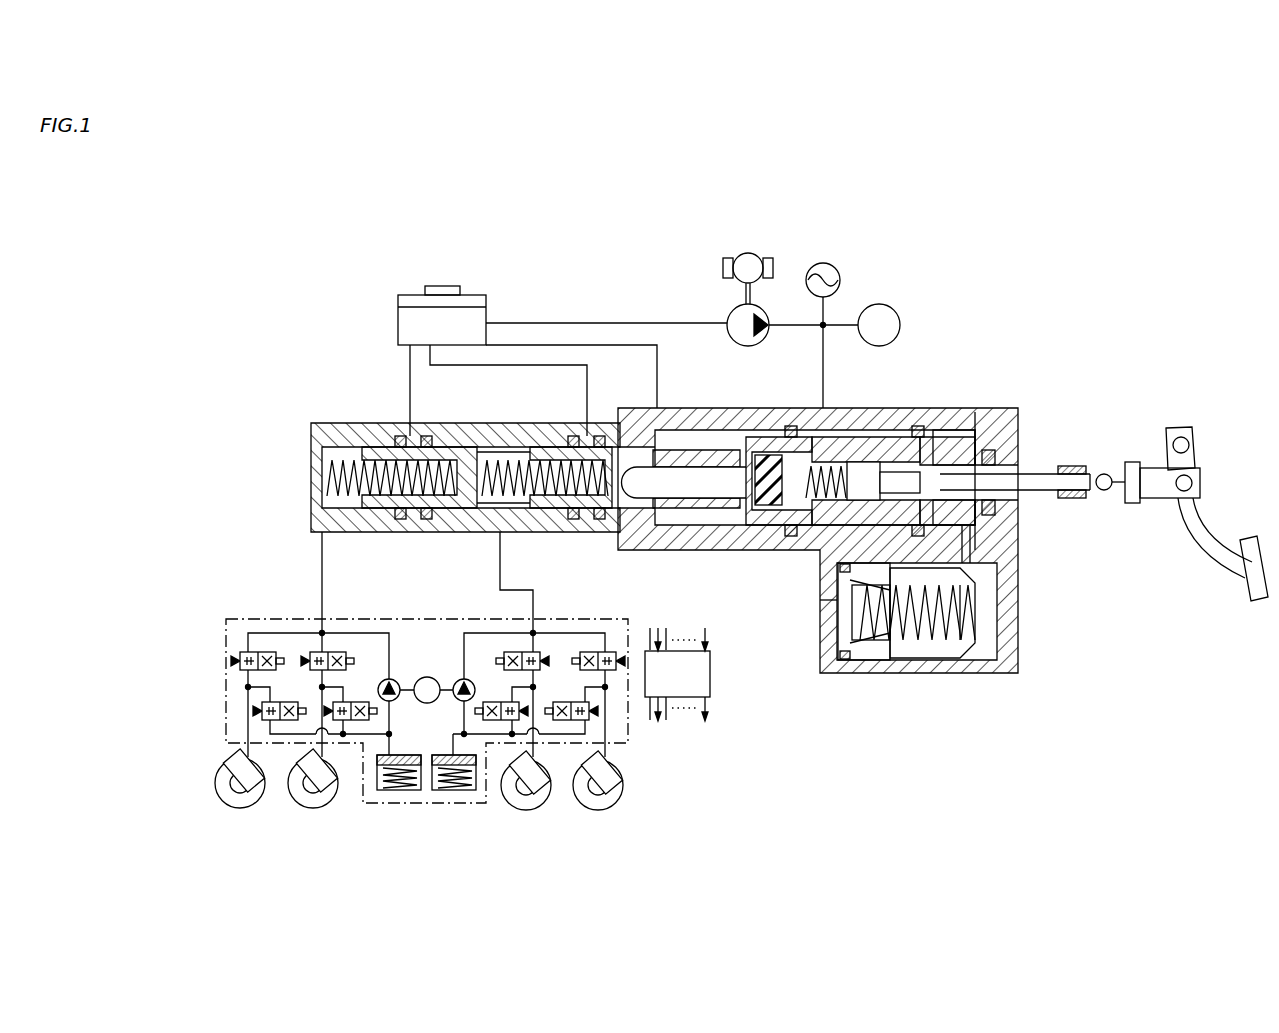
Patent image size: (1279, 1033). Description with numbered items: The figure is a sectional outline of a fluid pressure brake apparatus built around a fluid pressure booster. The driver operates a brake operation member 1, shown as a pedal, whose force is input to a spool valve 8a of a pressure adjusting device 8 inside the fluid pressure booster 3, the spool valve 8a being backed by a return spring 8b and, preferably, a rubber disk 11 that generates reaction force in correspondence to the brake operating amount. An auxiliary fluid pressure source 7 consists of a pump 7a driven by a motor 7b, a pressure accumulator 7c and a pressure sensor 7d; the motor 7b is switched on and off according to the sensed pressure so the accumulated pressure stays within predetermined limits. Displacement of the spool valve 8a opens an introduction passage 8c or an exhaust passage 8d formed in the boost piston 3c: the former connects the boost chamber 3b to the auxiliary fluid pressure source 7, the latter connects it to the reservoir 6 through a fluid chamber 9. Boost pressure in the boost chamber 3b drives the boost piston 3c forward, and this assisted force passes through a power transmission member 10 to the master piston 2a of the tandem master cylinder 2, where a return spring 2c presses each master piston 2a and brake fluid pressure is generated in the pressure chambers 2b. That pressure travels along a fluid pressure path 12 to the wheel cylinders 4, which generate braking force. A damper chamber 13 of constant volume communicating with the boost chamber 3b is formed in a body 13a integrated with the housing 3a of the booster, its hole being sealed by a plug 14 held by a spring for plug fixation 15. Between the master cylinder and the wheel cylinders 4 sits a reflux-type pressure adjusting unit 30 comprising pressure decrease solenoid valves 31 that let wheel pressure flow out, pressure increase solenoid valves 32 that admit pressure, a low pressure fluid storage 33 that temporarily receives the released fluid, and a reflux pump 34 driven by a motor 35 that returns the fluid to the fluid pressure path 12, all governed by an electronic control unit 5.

The brake operation member 1 is at (1258, 555).
The master cylinder 2 is at (485, 465).
The master piston 2a is at (442, 452).
The pressure chamber 2b is at (342, 500).
The return spring 2c is at (322, 484).
The fluid pressure booster 3 is at (848, 520).
The housing 3a is at (1010, 432).
The boost chamber 3b is at (958, 440).
The boost piston 3c is at (935, 530).
The wheel cylinder 4 is at (295, 775).
The electronic control unit 5 is at (710, 673).
The reservoir 6 is at (478, 300).
The auxiliary fluid pressure source 7 is at (793, 298).
The pump 7a is at (733, 311).
The motor 7b is at (745, 253).
The pressure accumulator 7c is at (832, 264).
The pressure sensor 7d is at (890, 307).
The pressure adjusting device 8 is at (911, 481).
The spool valve 8a is at (985, 500).
The return spring 8b is at (790, 428).
The introduction passage 8c is at (842, 470).
The exhaust passage 8d is at (800, 522).
The fluid chamber 9 is at (665, 520).
The power transmission member 10 is at (705, 485).
The rubber disk 11 is at (768, 510).
The fluid pressure path 12 is at (323, 600).
The damper chamber 13 is at (958, 651).
The body 13a is at (1000, 650).
The plug 14 is at (862, 660).
The spring for plug fixation 15 is at (995, 625).
The reflux-type pressure adjusting unit 30 is at (411, 695).
The pressure decrease solenoid valve 31 is at (262, 706).
The pressure increase solenoid valve 32 is at (240, 656).
The low pressure fluid storage 33 is at (440, 791).
The reflux pump 34 is at (392, 679).
The motor 35 is at (431, 677).